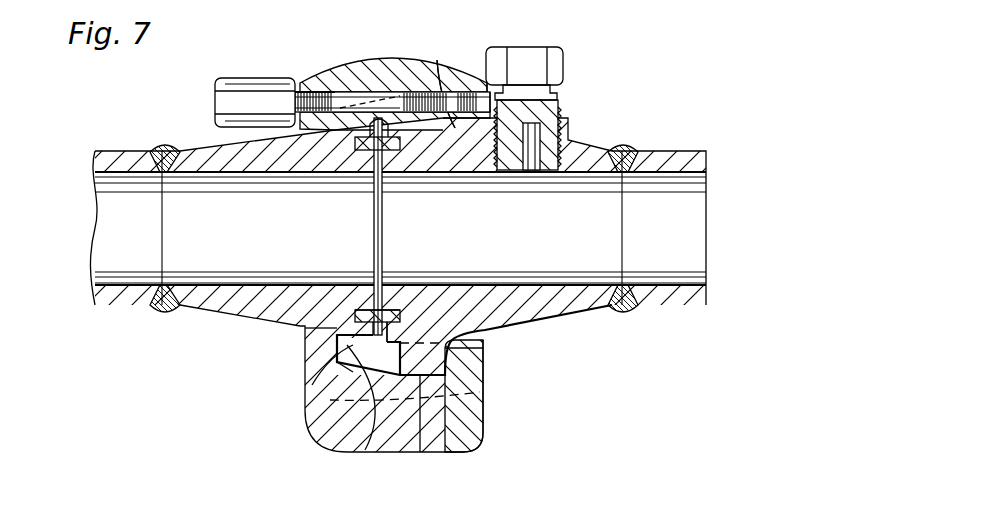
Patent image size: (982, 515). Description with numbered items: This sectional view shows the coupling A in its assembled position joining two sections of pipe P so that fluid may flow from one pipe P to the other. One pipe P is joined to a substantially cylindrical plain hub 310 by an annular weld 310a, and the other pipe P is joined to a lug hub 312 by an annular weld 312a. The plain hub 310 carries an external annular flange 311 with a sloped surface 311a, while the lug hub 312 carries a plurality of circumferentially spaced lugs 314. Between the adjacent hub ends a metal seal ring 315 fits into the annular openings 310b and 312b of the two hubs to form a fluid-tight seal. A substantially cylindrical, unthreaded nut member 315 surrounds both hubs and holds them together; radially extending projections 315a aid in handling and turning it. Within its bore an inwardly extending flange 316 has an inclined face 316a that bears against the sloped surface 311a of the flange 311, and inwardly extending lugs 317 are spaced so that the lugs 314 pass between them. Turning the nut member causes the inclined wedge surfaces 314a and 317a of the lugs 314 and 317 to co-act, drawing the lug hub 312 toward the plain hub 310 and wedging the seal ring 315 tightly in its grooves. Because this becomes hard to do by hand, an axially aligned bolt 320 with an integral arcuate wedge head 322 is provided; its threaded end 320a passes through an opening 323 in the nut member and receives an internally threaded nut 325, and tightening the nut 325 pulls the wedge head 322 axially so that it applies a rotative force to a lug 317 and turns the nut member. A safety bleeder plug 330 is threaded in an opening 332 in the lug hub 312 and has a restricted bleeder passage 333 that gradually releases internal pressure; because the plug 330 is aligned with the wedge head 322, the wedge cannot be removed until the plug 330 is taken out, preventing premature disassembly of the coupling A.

The plain hub 310 is at (222, 313).
The annular weld 310a is at (162, 313).
The annular opening of plain hub 310b is at (363, 303).
The external annular flange 311 is at (310, 407).
The inclined surface of annular flange 311a is at (322, 353).
The lug hub 312 is at (583, 310).
The annular weld 312a is at (625, 313).
The annular opening of lug hub 312b is at (400, 310).
The lugs 314 is at (410, 68).
The inclined shelf or wedge surface 314a is at (482, 350).
The seal ring 315 is at (382, 58).
The radially extending projections 315a is at (457, 428).
The inwardly extending flange 316 is at (302, 342).
The inclined face 316a is at (337, 372).
The inwardly extending lugs 317 is at (437, 63).
The inclined shelf or wedge surface 317a is at (427, 453).
The bolt 320 is at (338, 97).
The threaded end 320a is at (305, 80).
The wedge head 322 is at (460, 72).
The opening in nut member 323 is at (330, 98).
The internally threaded nut 325 is at (240, 78).
The safety bleeder plug 330 is at (563, 62).
The opening in lug hub 332 is at (560, 174).
The bleeder passage 333 is at (528, 175).
The pipe P is at (107, 152).
The coupling A is at (549, 324).